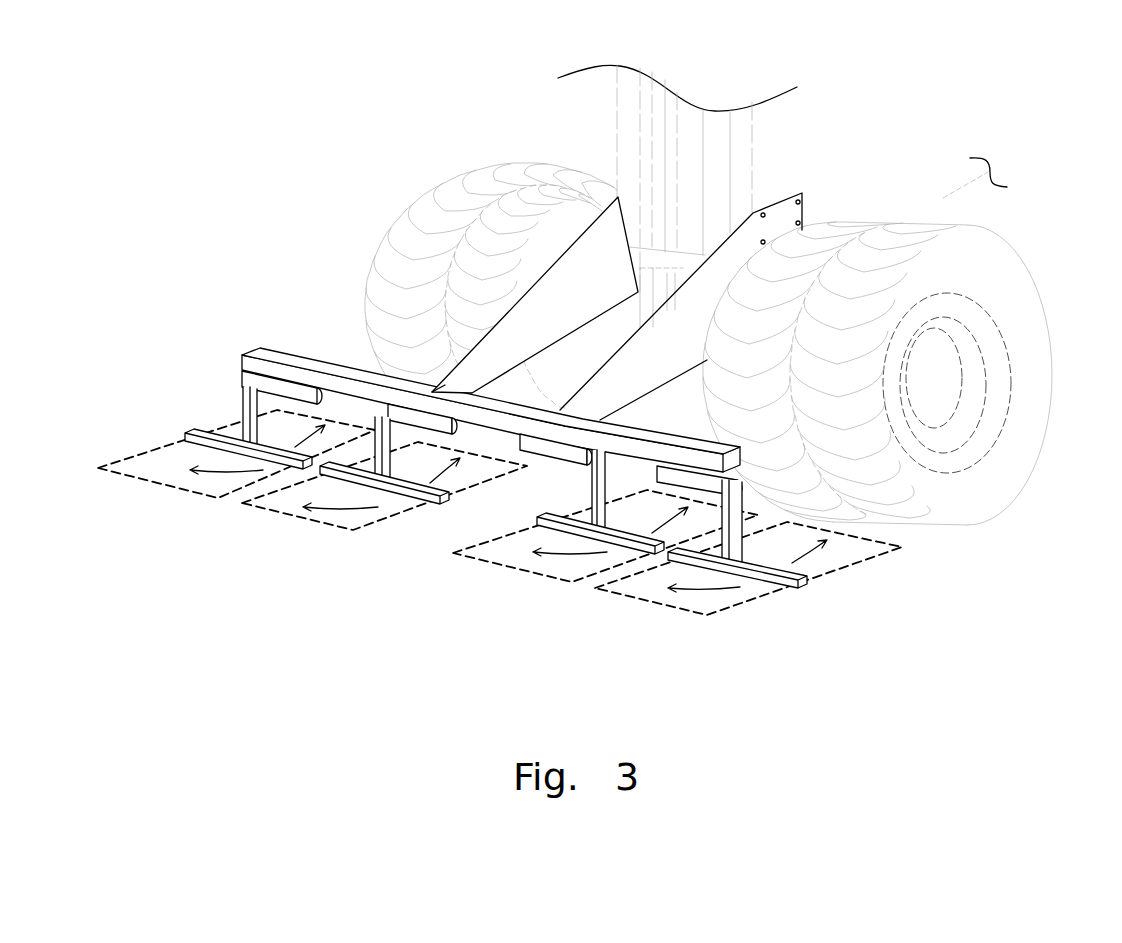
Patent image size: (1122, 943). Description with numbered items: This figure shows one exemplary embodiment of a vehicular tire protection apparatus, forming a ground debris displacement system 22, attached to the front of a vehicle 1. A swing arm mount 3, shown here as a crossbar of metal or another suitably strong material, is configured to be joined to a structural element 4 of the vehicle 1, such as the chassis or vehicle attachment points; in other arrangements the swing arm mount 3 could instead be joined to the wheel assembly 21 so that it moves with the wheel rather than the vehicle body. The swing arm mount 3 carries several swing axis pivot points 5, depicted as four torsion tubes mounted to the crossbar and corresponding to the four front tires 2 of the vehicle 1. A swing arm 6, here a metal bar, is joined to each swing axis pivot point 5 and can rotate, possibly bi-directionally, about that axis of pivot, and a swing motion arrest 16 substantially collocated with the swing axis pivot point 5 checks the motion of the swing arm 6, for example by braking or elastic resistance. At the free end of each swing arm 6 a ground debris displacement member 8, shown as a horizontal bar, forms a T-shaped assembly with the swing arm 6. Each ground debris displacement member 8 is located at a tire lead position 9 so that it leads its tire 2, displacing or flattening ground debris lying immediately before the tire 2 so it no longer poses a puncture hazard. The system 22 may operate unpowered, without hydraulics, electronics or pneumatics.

The vehicle 1 is at (684, 90).
The tire 2 is at (387, 228).
The wheel assembly 21 is at (537, 163).
The structural element 4 is at (588, 272).
The swing arm mount 3 is at (252, 352).
The swing arm 6 is at (242, 415).
The swing axis pivot point 5 is at (567, 457).
The swing motion arrest 16 is at (452, 430).
The ground debris displacement system 22 is at (380, 553).
The ground debris displacement member 8 is at (802, 580).
The tire lead position 9 is at (165, 492).